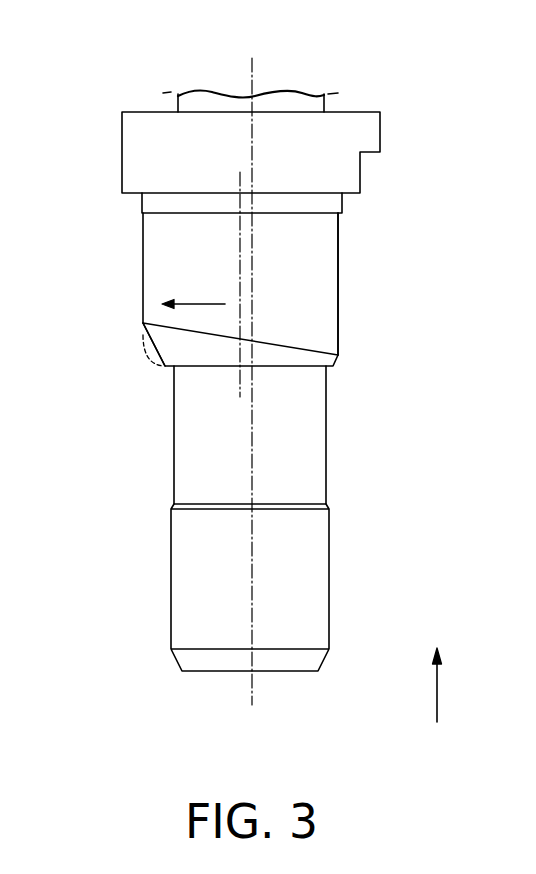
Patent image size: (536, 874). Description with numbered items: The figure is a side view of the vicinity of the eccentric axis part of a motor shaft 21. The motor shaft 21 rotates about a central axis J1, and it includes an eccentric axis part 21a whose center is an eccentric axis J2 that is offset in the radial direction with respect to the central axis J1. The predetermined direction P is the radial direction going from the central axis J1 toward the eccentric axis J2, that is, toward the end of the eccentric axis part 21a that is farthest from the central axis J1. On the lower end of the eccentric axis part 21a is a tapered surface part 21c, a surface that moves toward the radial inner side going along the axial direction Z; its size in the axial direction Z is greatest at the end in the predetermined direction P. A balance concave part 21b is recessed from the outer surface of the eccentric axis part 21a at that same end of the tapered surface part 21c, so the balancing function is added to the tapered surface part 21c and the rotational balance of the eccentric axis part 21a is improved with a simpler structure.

The motor shaft 21 is at (168, 142).
The eccentric axis part 21a is at (315, 280).
The balance concave part 21b is at (155, 353).
The tapered surface part 21c is at (178, 350).
The central axis J1 is at (252, 73).
The eccentric axis J2 is at (240, 262).
The predetermined direction P is at (201, 303).
The axial direction Z is at (435, 669).